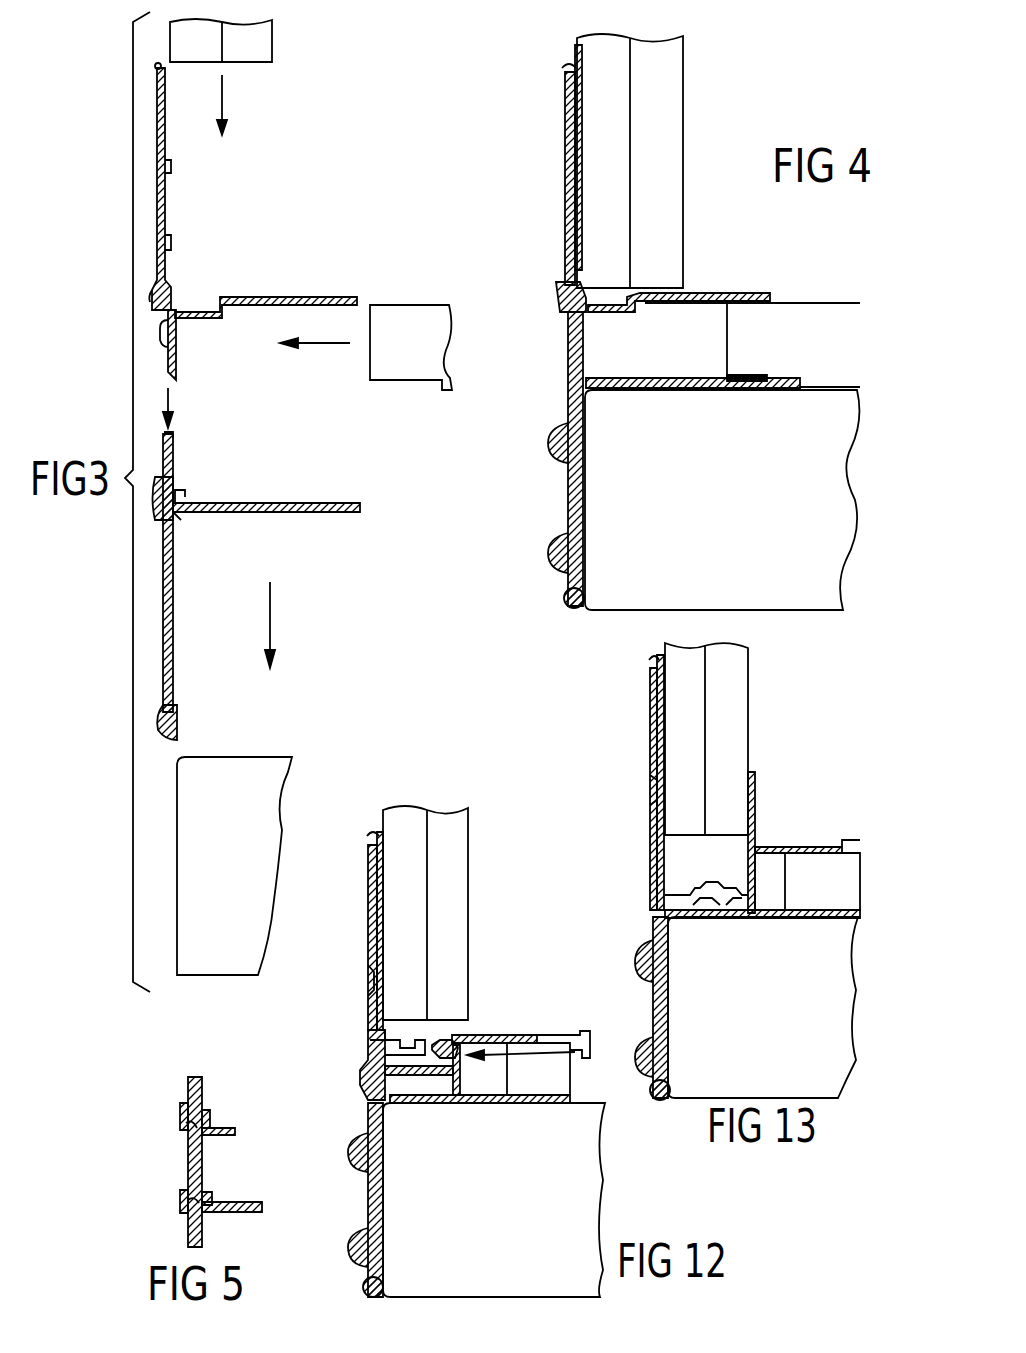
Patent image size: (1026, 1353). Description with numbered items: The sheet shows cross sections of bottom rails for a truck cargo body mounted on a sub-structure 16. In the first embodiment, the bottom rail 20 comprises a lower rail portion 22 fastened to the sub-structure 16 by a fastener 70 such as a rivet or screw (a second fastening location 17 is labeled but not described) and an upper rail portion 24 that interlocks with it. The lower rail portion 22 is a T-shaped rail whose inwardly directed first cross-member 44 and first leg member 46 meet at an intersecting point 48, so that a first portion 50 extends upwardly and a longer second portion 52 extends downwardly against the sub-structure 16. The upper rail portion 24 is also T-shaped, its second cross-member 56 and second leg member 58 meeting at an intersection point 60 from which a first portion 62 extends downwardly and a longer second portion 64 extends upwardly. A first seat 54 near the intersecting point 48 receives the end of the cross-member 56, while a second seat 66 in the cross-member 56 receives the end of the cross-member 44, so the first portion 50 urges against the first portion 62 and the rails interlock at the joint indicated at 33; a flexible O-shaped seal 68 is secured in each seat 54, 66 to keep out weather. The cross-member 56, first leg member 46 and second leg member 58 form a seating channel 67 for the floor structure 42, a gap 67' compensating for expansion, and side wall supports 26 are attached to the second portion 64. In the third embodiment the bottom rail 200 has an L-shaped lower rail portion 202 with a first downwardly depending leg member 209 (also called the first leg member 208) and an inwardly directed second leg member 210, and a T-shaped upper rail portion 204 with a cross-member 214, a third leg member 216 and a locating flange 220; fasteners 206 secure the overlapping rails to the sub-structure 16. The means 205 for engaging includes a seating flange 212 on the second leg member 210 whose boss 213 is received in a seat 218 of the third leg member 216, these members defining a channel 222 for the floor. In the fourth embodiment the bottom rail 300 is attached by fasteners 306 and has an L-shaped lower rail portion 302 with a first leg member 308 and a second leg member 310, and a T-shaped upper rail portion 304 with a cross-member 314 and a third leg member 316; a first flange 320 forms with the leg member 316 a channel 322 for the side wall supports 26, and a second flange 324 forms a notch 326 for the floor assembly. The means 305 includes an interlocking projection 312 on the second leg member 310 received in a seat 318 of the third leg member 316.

In FIG. 3, the sub-structure 16 is at (236, 878).
In FIG. 4, the sub-structure 16 is at (727, 510).
In FIG. 13, the sub-structure 16 is at (764, 1074).
In FIG. 12, the sub-structure 16 is at (509, 1262).
In FIG. 4, the rib 17 is at (548, 553).
In FIG. 3, the bottom rail 20 is at (287, 180).
In FIG. 4, the bottom rail 20 is at (565, 205).
In FIG. 3, the lower rail portion 22 is at (305, 503).
In FIG. 4, the lower rail portion 22 is at (564, 596).
In FIG. 5, the lower rail portion 22 is at (250, 1212).
In FIG. 3, the upper rail portion 24 is at (165, 203).
In FIG. 4, the upper rail portion 24 is at (570, 103).
In FIG. 5, the upper rail portion 24 is at (202, 1087).
In FIG. 3, the side wall supports 26 is at (272, 37).
In FIG. 4, the side wall supports 26 is at (683, 78).
In FIG. 13, the side wall supports 26 is at (748, 668).
In FIG. 12, the side wall supports 26 is at (468, 822).
In FIG. 4, the joint region 33 is at (544, 338).
In FIG. 3, the floor structure 42 is at (383, 305).
In FIG. 4, the floor structure 42 is at (835, 303).
In FIG. 13, the floor structure 42 is at (855, 853).
In FIG. 12, the floor structure 42 is at (567, 1043).
In FIG. 3, the first cross-member 44 is at (173, 600).
In FIG. 3, the first leg member 46 is at (338, 512).
In FIG. 4, the first leg member 46 is at (700, 388).
In FIG. 3, the intersecting point 48 is at (183, 517).
In FIG. 3, the first portion 50 is at (175, 438).
In FIG. 3, the second portion 52 is at (177, 708).
In FIG. 3, the first seat 54 is at (192, 472).
In FIG. 3, the second cross-member 56 is at (168, 158).
In FIG. 3, the second leg member 58 is at (296, 297).
In FIG. 4, the second leg member 58 is at (679, 302).
In FIG. 3, the intersection point 60 is at (168, 292).
In FIG. 3, the first portion 62 is at (176, 348).
In FIG. 3, the second portion 64 is at (168, 243).
In FIG. 3, the second seat 66 is at (158, 327).
In FIG. 4, the seating channel 67 is at (807, 348).
In FIG. 4, the gap 67' is at (638, 399).
In FIG. 5, the seal 68 is at (184, 1127).
In FIG. 4, the fastener 70 is at (548, 443).
In FIG. 12, the bottom rail 200 is at (368, 928).
In FIG. 12, the lower rail portion 202 is at (364, 1284).
In FIG. 12, the upper rail portion 204 is at (368, 985).
In FIG. 12, the means for interlockingly engaging 205 is at (589, 1050).
In FIG. 12, the fasteners 206 is at (350, 1145).
In FIG. 12, the first leg member 208 is at (400, 1220).
In FIG. 12, the first downwardly depending leg member 209 is at (383, 1168).
In FIG. 12, the second leg member 210 is at (490, 1085).
In FIG. 12, the seating flange 212 is at (450, 1100).
In FIG. 12, the boss 213 is at (425, 1040).
In FIG. 12, the cross-member 214 is at (370, 860).
In FIG. 12, the third leg member 216 is at (490, 1035).
In FIG. 12, the seat 218 is at (445, 1040).
In FIG. 12, the locating flange 220 is at (378, 1078).
In FIG. 12, the channel 222 is at (565, 1103).
In FIG. 13, the bottom rail 300 is at (650, 738).
In FIG. 13, the lower rail portion 302 is at (668, 1025).
In FIG. 13, the upper rail portion 304 is at (655, 672).
In FIG. 13, the means for engaging 305 is at (674, 884).
In FIG. 13, the fasteners 306 is at (637, 955).
In FIG. 13, the first leg member 308 is at (668, 988).
In FIG. 13, the second leg member 310 is at (820, 918).
In FIG. 13, the interlocking projection 312 is at (705, 912).
In FIG. 13, the cross-member 314 is at (650, 790).
In FIG. 13, the third leg member 316 is at (650, 894).
In FIG. 13, the seat 318 is at (735, 913).
In FIG. 13, the first flange 320 is at (755, 788).
In FIG. 13, the channel 322 is at (712, 840).
In FIG. 13, the second flange 324 is at (780, 847).
In FIG. 13, the notch 326 is at (788, 884).